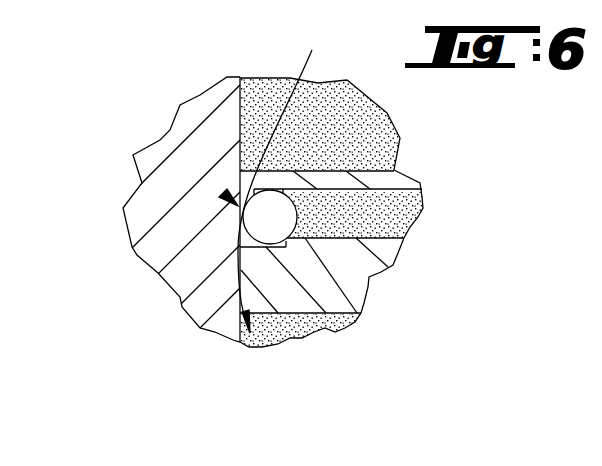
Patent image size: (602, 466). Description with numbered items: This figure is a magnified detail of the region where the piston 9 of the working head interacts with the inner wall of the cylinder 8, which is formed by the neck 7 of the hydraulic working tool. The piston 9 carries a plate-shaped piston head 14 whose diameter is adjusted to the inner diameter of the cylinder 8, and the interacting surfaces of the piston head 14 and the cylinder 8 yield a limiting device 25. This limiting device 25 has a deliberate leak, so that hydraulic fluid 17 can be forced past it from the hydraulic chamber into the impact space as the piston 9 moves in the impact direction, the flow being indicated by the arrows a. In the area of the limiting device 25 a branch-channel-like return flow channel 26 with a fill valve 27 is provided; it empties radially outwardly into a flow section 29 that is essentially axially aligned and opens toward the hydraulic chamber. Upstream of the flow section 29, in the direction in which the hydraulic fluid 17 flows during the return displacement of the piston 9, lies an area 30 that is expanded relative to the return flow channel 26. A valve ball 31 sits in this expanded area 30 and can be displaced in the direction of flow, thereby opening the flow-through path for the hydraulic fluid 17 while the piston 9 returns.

The neck 7 is at (162, 209).
The cylinder 8 is at (265, 244).
The piston 9 is at (355, 242).
The piston head 14 is at (339, 295).
The hydraulic fluid 17 is at (353, 212).
The limiting device 25 is at (186, 214).
The return flow channel 26 is at (372, 250).
The fill valve 27 is at (169, 143).
The flow section 29 is at (270, 128).
The expanded area 30 is at (277, 312).
The valve ball 31 is at (285, 173).
The arrows a is at (252, 163).